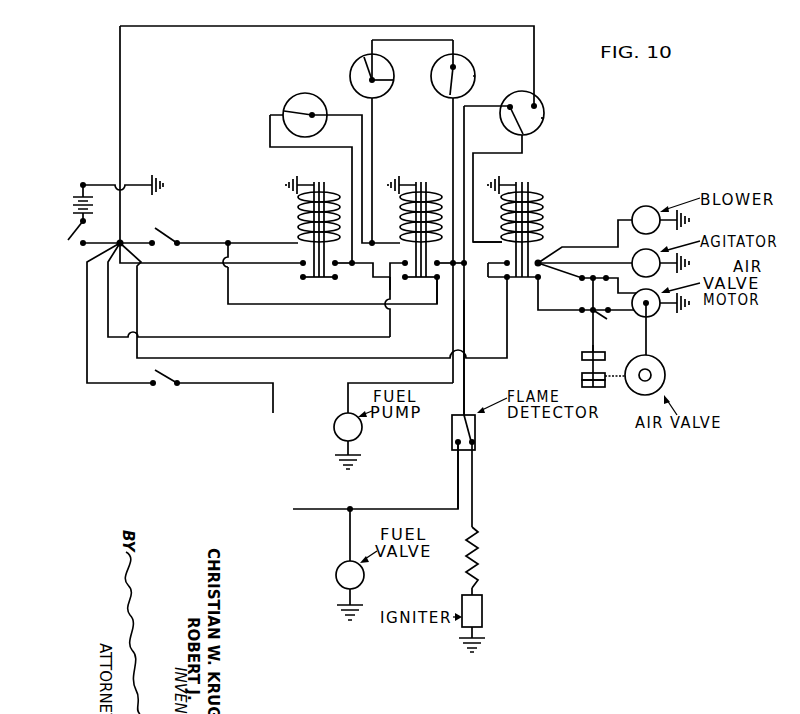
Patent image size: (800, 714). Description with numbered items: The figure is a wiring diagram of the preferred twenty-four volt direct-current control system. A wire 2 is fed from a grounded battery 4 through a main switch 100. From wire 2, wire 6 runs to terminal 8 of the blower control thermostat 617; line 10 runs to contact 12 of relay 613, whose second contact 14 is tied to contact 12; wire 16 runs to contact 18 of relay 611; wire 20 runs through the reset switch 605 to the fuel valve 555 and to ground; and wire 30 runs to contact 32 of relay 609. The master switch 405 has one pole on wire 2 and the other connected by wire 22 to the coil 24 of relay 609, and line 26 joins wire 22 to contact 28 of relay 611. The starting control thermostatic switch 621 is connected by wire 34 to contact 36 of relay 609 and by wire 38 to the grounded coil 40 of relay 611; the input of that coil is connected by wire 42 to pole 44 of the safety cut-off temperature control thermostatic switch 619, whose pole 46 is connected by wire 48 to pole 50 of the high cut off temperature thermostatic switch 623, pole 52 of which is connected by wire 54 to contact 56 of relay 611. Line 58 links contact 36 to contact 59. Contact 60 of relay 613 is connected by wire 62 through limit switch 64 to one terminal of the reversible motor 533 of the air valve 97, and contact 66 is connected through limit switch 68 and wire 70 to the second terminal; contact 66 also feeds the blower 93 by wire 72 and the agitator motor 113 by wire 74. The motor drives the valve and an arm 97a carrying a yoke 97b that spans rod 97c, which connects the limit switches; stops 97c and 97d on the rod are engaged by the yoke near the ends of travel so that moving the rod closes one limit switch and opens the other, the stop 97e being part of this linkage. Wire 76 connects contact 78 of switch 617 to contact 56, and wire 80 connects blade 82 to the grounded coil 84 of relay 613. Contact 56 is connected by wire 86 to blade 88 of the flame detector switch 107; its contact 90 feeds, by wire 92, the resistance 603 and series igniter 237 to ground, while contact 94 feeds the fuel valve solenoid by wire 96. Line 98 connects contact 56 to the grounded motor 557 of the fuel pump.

The wire 2 is at (118, 242).
The battery 4 is at (91, 205).
The wire 6 is at (534, 50).
The terminal 8 is at (544, 104).
The line 10 is at (138, 297).
The contact 12 is at (507, 278).
The contact 14 is at (507, 262).
The wire 16 is at (108, 298).
The contact 18 is at (405, 262).
The wire 20 is at (87, 337).
The wire 22 is at (236, 243).
The coil 24 is at (298, 207).
The line 26 is at (232, 300).
The contact 28 is at (437, 278).
The wire 30 is at (166, 264).
The contact 32 is at (303, 262).
The wire 34 is at (270, 133).
The contact 36 is at (353, 262).
The wire 38 is at (334, 115).
The coil 40 is at (400, 207).
The wire 42 is at (372, 132).
The pole 44 is at (394, 79).
The pole 46 is at (367, 60).
The wire 48 is at (378, 40).
The pole 50 is at (460, 58).
The pole 52 is at (444, 81).
The wire 54 is at (453, 110).
The contact 56 is at (437, 263).
The line 58 is at (340, 270).
The contact 59 is at (388, 282).
The contact 60 is at (540, 282).
The wire 62 is at (590, 326).
The limit switch 64 is at (604, 326).
The contact 66 is at (540, 262).
The limit switch 68 is at (596, 276).
The wire 70 is at (618, 284).
The wire 72 is at (583, 247).
The wire 74 is at (565, 254).
The wire 76 is at (467, 106).
The contact 78 is at (533, 105).
The wire 80 is at (536, 153).
The blade 82 is at (527, 120).
The coil 84 is at (545, 210).
The wire 86 is at (465, 330).
The blade 88 is at (470, 434).
The contact 90 is at (475, 445).
The wire 92 is at (473, 503).
The blower 93 is at (651, 208).
The contact 94 is at (456, 444).
The wire 96 is at (457, 500).
The valve 97 is at (662, 369).
The arm 97a is at (622, 388).
The yoke 97b is at (582, 375).
The rod 97c is at (582, 384).
The stop 97d is at (582, 354).
The air valve contact 97e is at (604, 344).
The line 98 is at (453, 320).
The main switch 100 is at (85, 222).
The flame detector switch 107 is at (476, 425).
The agitator motor 113 is at (650, 249).
The igniter 237 is at (483, 607).
The master switch 405 is at (160, 228).
The motor 533 is at (652, 328).
The fuel valve 555 is at (364, 573).
The motor 557 is at (362, 428).
The resistance 603 is at (478, 565).
The reset switch 605 is at (164, 380).
The relay 609 is at (300, 237).
The relay 611 is at (401, 232).
The relay 613 is at (503, 241).
The blower control thermostat 617 is at (544, 121).
The safety cut-off temperature control thermostatic switch 619 is at (387, 60).
The starting control thermostatic switch 621 is at (284, 98).
The high cut off temperature thermostatic switch 623 is at (475, 76).